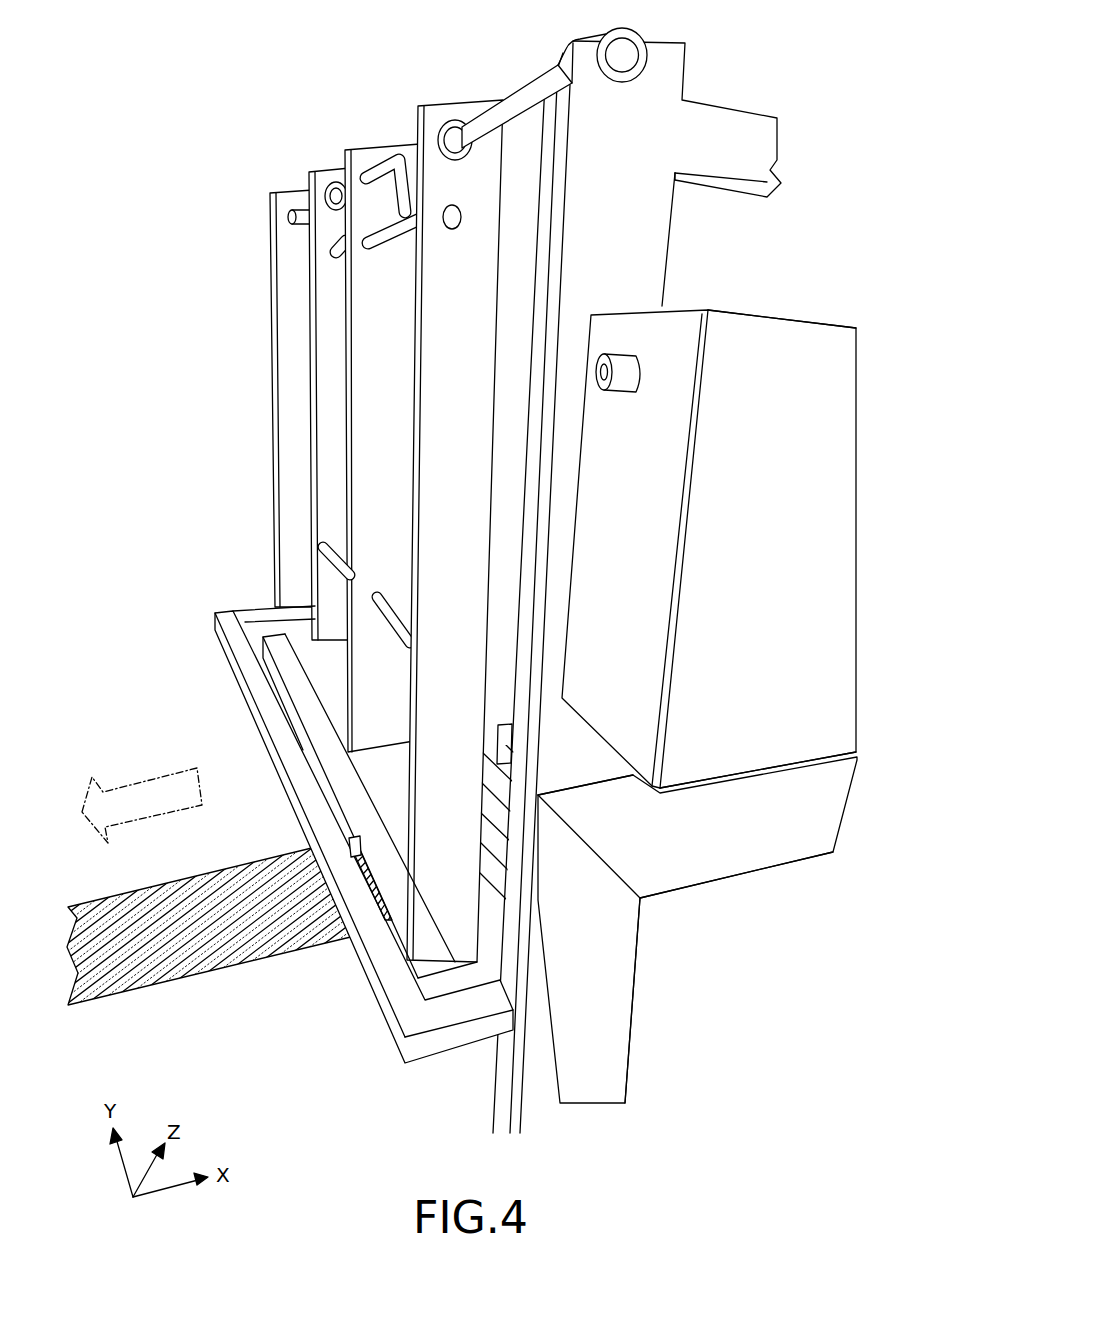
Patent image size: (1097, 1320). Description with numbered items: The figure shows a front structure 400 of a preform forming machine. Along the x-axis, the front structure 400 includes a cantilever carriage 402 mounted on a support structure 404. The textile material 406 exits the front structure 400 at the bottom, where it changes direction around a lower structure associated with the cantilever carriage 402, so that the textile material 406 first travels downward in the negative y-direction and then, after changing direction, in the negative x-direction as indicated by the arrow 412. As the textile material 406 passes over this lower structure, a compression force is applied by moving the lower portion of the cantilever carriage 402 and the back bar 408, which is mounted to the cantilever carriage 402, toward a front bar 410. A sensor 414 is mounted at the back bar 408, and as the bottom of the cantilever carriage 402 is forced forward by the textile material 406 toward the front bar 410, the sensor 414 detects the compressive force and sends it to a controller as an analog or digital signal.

The front structure 400 is at (230, 135).
The cantilever carriage 402 is at (434, 116).
The support structure 404 is at (509, 92).
The textile material 406 is at (233, 952).
The back bar 408 is at (368, 945).
The front bar 410 is at (363, 1002).
The arrow 412 is at (145, 790).
The sensor 414 is at (353, 844).